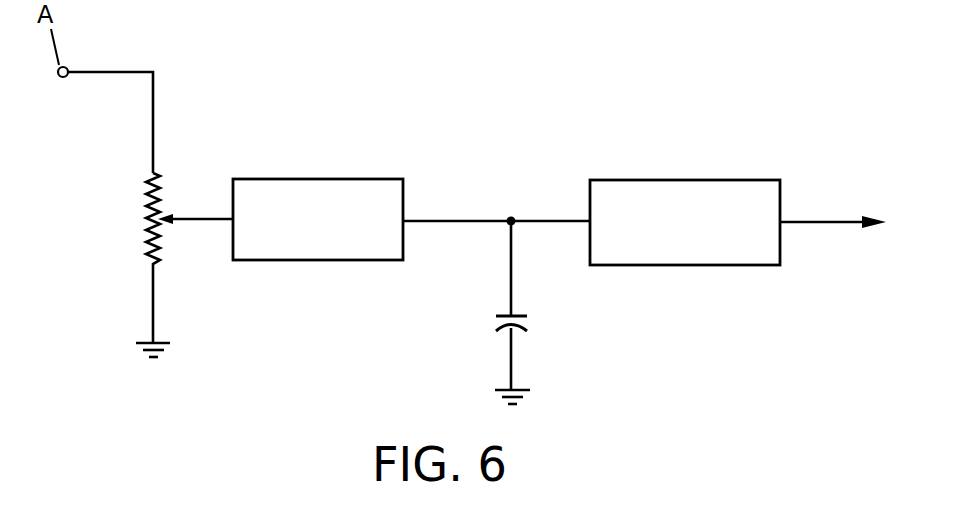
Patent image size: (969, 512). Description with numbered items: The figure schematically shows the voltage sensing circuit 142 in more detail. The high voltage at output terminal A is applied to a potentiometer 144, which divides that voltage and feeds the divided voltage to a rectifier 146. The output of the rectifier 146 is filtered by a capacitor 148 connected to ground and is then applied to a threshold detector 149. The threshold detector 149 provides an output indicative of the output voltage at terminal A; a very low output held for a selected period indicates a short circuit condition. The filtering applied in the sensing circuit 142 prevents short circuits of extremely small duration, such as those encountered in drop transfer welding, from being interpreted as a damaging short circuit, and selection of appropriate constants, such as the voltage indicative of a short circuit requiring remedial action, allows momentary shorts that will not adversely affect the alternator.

The voltage sensing circuit 142 is at (434, 140).
The potentiometer 144 is at (147, 197).
The rectifier 146 is at (320, 185).
The capacitor 148 is at (495, 321).
The threshold detector 149 is at (667, 188).